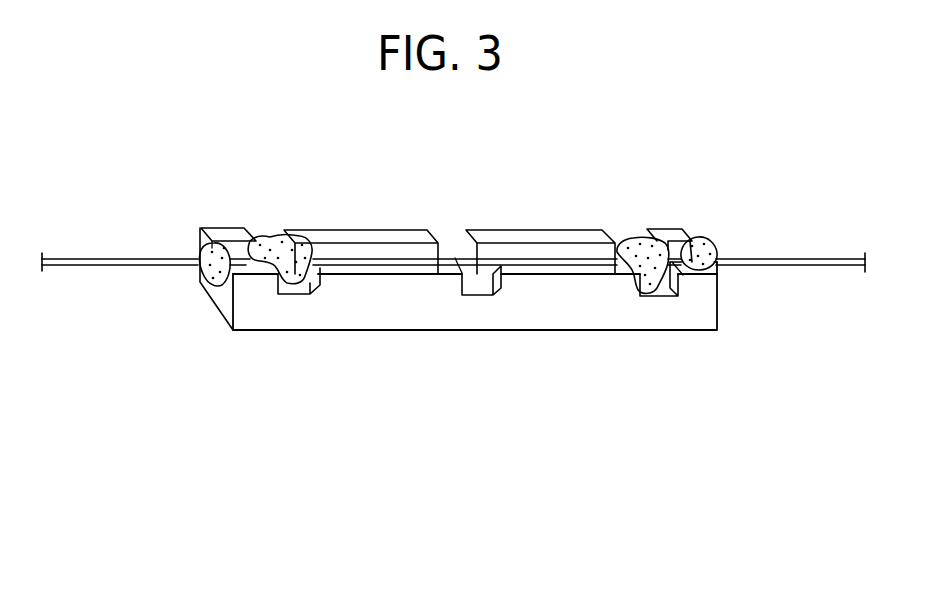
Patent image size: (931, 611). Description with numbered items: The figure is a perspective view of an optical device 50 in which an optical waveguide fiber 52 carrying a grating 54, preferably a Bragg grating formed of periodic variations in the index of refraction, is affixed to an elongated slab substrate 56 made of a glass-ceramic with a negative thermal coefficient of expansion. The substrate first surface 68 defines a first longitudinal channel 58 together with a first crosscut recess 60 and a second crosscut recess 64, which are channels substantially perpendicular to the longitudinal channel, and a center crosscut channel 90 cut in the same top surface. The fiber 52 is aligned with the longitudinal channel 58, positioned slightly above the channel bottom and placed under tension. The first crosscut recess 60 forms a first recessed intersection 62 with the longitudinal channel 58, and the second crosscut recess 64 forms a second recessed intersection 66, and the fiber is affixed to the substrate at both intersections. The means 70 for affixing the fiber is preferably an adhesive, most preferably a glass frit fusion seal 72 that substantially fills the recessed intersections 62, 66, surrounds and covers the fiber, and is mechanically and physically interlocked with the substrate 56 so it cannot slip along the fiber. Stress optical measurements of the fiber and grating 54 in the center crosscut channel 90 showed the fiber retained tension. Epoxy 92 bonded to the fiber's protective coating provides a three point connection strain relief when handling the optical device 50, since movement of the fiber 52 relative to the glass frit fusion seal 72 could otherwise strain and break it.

The optical device 50 is at (108, 149).
The optical waveguide fiber 52 is at (801, 250).
The grating 54 is at (460, 258).
The substrate 56 is at (412, 336).
The first longitudinal channel 58 is at (523, 242).
The first crosscut recess 60 is at (261, 223).
The first recessed intersection 62 is at (250, 267).
The second crosscut recess 64 is at (628, 222).
The second recessed intersection 66 is at (610, 248).
The substrate first surface 68 is at (378, 270).
The means for affixing 70 is at (295, 295).
The glass frit fusion seal 72 is at (273, 243).
The center crosscut channel 90 is at (489, 312).
The epoxy 92 is at (202, 248).